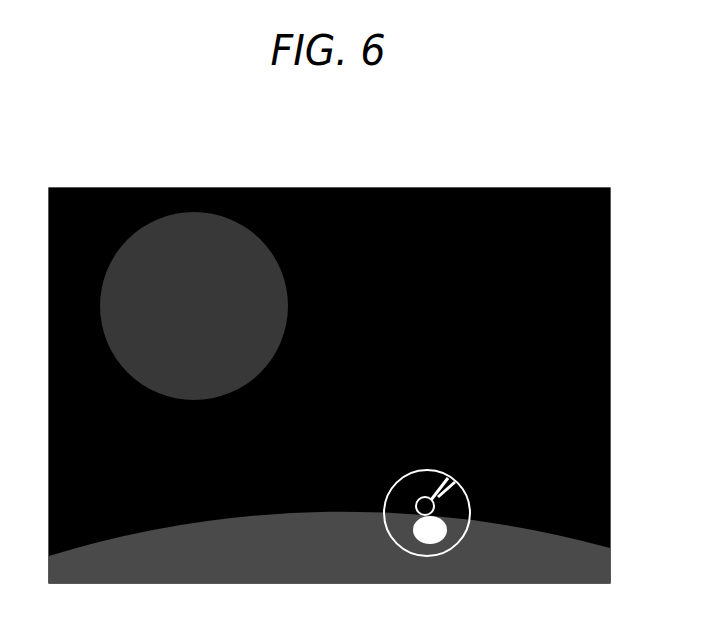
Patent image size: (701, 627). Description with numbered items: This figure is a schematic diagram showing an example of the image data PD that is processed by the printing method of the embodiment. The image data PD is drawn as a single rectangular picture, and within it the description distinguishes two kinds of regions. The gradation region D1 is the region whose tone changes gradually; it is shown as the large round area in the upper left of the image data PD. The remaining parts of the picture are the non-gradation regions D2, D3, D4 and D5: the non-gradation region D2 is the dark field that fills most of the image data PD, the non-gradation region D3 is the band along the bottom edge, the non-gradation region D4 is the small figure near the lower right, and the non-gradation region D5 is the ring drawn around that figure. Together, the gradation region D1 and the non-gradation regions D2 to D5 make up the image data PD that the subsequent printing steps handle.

The image data PD is at (496, 180).
The gradation region D1 is at (199, 229).
The non-gradation region D2 is at (558, 350).
The non-gradation region D3 is at (603, 561).
The non-gradation region D4 is at (408, 532).
The non-gradation region D5 is at (444, 545).